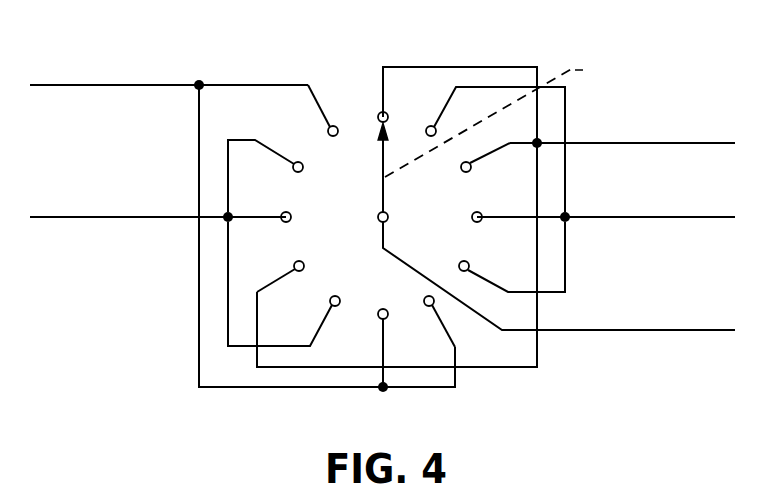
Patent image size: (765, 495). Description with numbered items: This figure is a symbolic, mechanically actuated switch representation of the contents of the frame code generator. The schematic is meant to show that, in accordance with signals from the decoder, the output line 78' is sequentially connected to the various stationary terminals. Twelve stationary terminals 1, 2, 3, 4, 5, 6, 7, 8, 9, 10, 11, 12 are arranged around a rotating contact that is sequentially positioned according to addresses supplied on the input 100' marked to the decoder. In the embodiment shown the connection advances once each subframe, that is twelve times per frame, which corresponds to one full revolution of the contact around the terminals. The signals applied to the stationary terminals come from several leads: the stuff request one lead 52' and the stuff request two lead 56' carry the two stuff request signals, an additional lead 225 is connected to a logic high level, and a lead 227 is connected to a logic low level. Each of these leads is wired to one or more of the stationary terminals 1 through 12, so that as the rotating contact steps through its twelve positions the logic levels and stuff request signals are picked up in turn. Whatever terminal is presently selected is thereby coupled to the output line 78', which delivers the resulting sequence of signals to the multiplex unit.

The stationary terminal 1 is at (389, 155).
The stationary terminal 2 is at (495, 149).
The stationary terminal 3 is at (485, 164).
The stationary terminal 4 is at (484, 227).
The stationary terminal 5 is at (512, 259).
The stationary terminal 6 is at (434, 321).
The stationary terminal 7 is at (375, 348).
The stationary terminal 8 is at (284, 284).
The stationary terminal 9 is at (280, 268).
The stationary terminal 10 is at (290, 204).
The stationary terminal 11 is at (271, 175).
The stationary terminal 12 is at (330, 110).
The logic 1 lead 225 is at (139, 85).
The logic 0 lead 227 is at (612, 143).
The stuff request 1 lead 52' is at (158, 204).
The stuff request 2 lead 56' is at (606, 208).
The output line 78' is at (559, 276).
The address input 100' is at (449, 204).